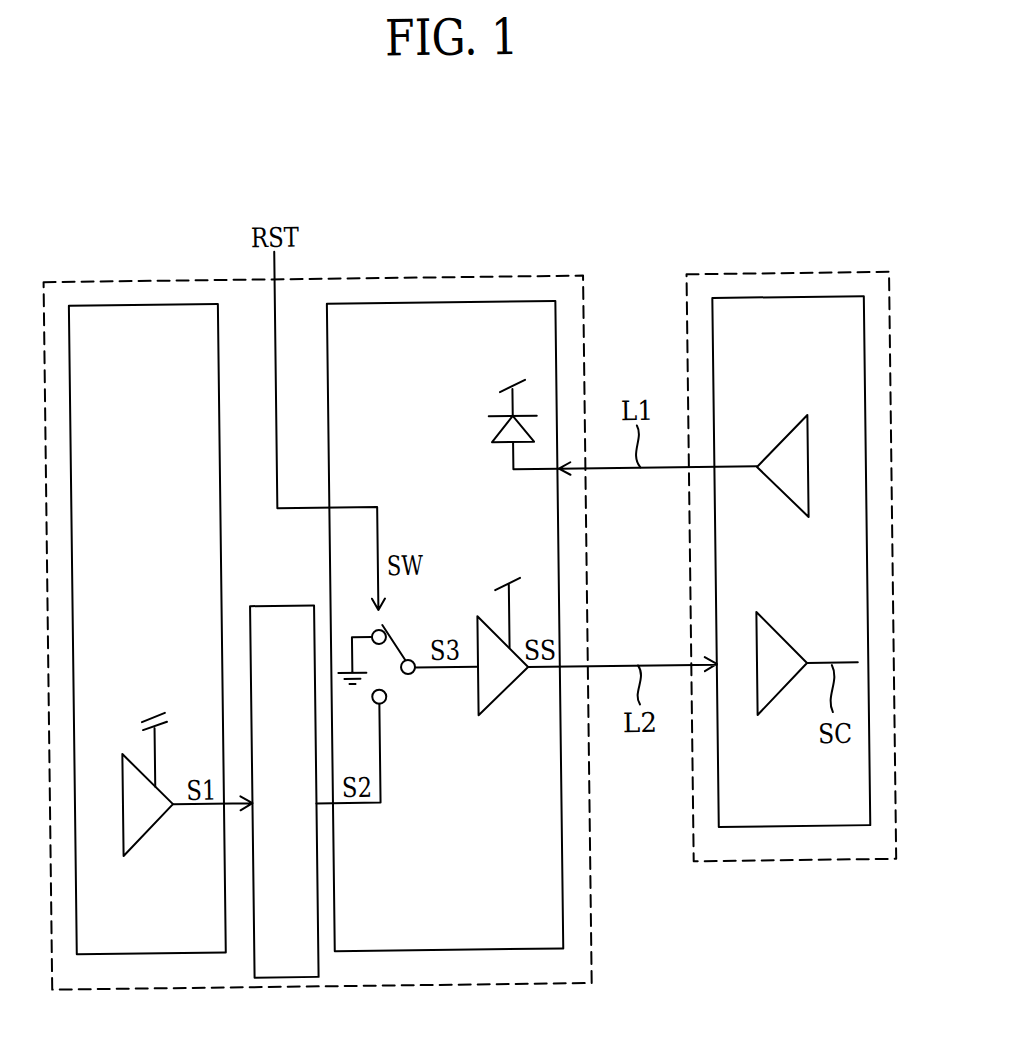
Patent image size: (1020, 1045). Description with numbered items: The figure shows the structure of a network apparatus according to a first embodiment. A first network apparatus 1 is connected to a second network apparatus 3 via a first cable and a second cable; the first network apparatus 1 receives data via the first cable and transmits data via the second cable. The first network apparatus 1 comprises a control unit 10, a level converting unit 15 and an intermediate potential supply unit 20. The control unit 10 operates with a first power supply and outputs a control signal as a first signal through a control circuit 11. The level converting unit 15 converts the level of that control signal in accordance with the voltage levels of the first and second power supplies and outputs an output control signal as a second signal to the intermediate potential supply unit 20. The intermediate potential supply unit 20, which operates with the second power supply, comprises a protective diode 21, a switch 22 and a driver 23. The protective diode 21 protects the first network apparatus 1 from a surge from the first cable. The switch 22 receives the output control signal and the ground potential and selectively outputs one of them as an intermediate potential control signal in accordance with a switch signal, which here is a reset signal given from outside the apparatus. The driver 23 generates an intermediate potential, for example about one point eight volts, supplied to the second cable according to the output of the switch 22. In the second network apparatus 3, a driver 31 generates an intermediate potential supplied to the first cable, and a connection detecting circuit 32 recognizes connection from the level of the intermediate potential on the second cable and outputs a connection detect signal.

The first network apparatus 1 is at (366, 273).
The second network apparatus 3 is at (784, 275).
The control unit 10 is at (144, 298).
The control circuit 11 is at (146, 820).
The level converting unit 15 is at (280, 601).
The intermediate potential supply unit 20 is at (456, 301).
The protective diode 21 is at (497, 428).
The switch 22 is at (409, 691).
The driver 23 is at (511, 690).
The driver 31 is at (782, 443).
The connection detecting circuit 32 is at (790, 643).